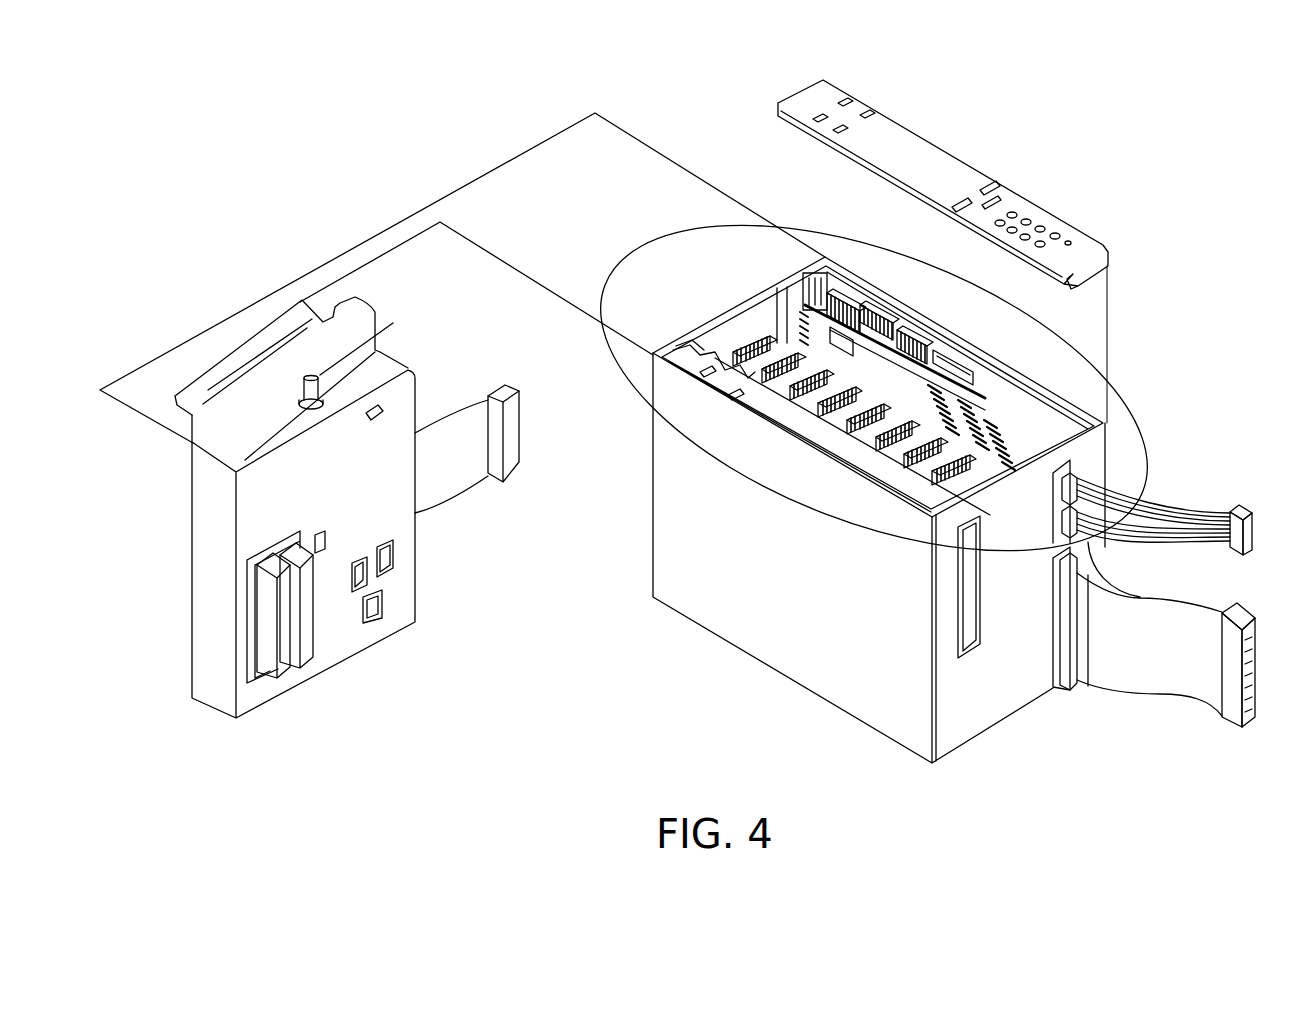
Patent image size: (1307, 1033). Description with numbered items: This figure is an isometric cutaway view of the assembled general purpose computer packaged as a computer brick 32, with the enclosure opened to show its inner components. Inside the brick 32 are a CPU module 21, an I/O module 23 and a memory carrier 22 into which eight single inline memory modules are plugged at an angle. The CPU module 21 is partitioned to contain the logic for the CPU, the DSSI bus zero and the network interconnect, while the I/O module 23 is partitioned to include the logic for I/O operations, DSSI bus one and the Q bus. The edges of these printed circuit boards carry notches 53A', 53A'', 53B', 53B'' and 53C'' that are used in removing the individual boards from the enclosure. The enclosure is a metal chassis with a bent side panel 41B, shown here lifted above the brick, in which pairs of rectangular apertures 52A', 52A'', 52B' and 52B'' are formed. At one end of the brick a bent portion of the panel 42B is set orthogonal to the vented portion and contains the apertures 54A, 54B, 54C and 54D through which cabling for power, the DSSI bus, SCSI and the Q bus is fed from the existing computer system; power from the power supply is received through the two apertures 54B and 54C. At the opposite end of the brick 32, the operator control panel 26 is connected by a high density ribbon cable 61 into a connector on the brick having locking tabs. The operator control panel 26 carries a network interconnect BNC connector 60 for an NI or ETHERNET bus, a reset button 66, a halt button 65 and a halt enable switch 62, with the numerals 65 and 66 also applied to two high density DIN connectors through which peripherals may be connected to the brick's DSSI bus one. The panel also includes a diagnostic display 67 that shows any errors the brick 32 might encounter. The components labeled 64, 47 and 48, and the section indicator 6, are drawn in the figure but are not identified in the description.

The computer brick 32 is at (590, 58).
The operator control panel 26 is at (438, 578).
The network interconnect BNC connector 60 is at (326, 390).
The high density ribbon cable 61 is at (495, 387).
The halt enable switch 62 is at (386, 409).
The switch 64 is at (378, 607).
The halt button 65 is at (355, 590).
The reset button 66 is at (393, 548).
The diagnostic display 67 is at (320, 535).
The side panel 41B is at (1045, 216).
The rectangular aperture 52A' is at (860, 75).
The rectangular aperture 52A'' is at (907, 103).
The rectangular aperture 52B' is at (780, 128).
The rectangular aperture 52B'' is at (800, 145).
The bent panel portion 42B is at (993, 717).
The aperture 54A is at (958, 660).
The aperture 54B is at (1053, 500).
The aperture 54C is at (1053, 530).
The aperture 54D is at (1120, 568).
The ribbon cable connector 47 is at (1254, 618).
The wire harness connector 48 is at (1248, 512).
The CPU module 21 is at (1047, 407).
The section view indicator 6 is at (884, 256).
The memory carrier 22 is at (692, 345).
The I/O module 23 is at (907, 327).
The notch 53A' is at (663, 417).
The notch 53A'' is at (639, 388).
The notch 53B' is at (917, 308).
The notch 53B'' is at (770, 281).
The notch 53C'' is at (869, 257).